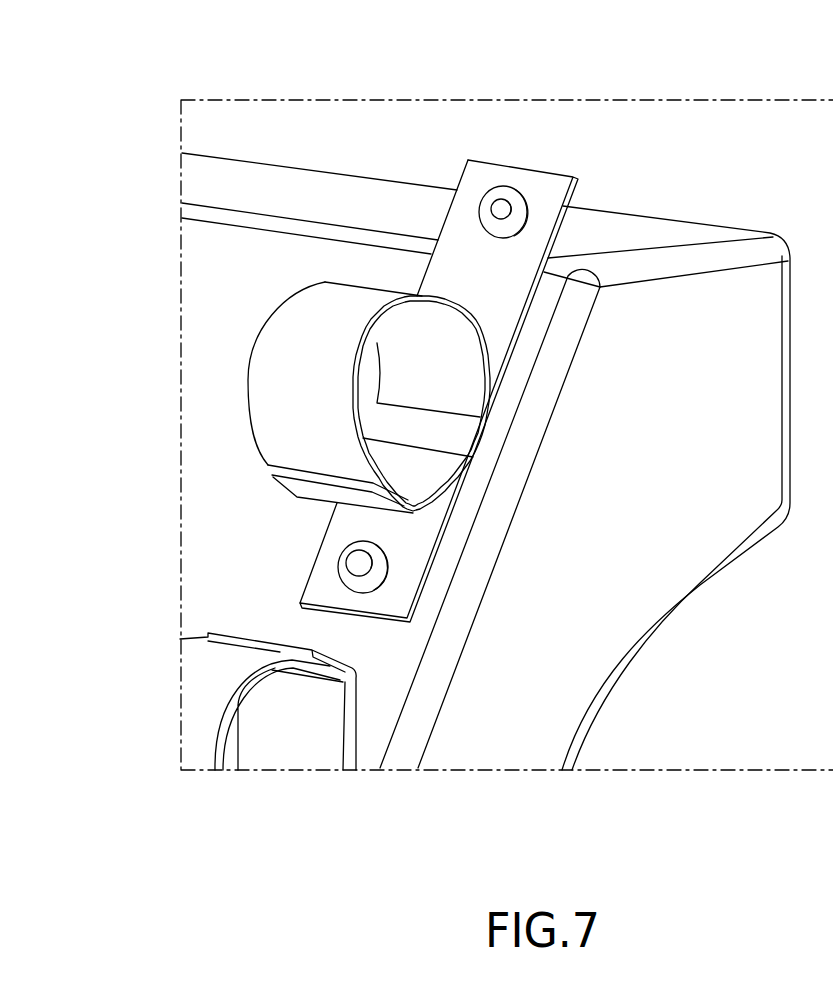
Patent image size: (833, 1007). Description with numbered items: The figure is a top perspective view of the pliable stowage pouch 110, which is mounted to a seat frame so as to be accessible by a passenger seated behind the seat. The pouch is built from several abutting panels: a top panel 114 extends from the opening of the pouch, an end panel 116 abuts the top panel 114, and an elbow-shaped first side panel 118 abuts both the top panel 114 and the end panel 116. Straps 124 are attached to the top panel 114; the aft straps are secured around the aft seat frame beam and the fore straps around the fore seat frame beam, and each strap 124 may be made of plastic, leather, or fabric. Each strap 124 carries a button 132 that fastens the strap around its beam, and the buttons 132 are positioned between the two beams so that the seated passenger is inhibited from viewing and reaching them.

The pliable stowage pouch 110 is at (258, 58).
The top panel 114 is at (228, 551).
The end panel 116 is at (372, 215).
The first side panel 118 is at (672, 452).
The straps 124 is at (560, 184).
The button 132 is at (507, 190).